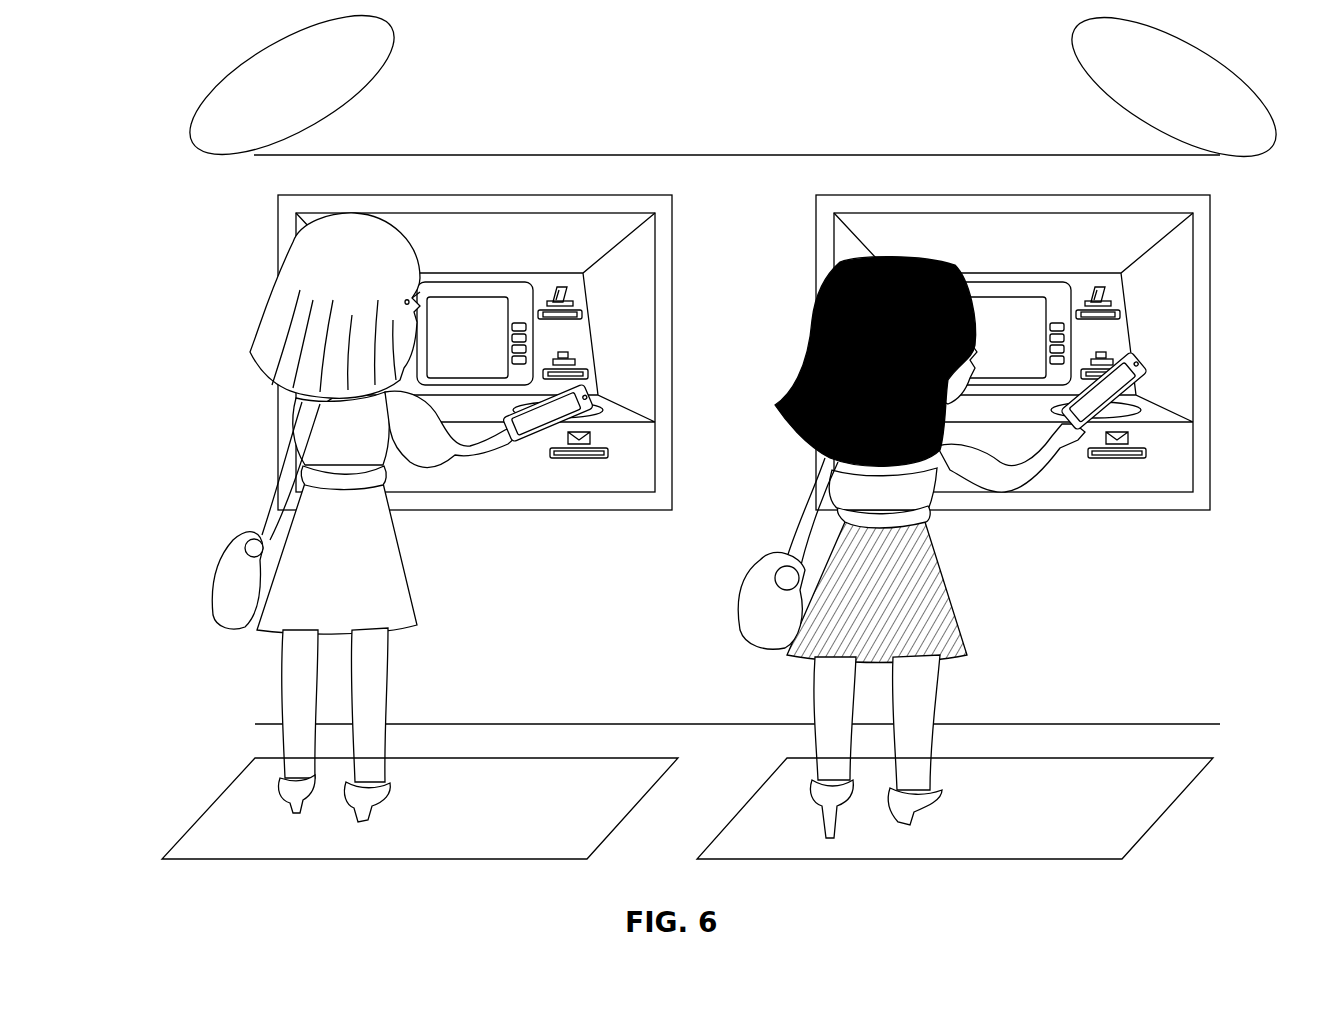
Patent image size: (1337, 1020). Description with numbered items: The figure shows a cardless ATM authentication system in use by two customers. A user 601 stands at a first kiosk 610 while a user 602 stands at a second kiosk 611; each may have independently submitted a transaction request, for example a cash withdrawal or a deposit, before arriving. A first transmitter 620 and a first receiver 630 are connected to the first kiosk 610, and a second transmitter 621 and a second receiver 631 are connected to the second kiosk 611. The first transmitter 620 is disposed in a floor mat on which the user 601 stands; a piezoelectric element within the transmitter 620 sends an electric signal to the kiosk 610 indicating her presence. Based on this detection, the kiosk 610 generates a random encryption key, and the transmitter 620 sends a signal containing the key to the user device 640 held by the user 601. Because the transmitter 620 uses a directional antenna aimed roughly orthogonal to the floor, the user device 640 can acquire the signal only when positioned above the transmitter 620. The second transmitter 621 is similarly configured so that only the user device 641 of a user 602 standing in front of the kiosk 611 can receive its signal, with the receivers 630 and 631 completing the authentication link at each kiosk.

The user 601 is at (247, 453).
The user 602 is at (962, 572).
The first kiosk 610 is at (672, 250).
The second kiosk 611 is at (1208, 250).
The first transmitter 620 is at (643, 797).
The second transmitter 621 is at (1173, 798).
The first receiver 630 is at (193, 118).
The second receiver 631 is at (1245, 90).
The user device 640 is at (594, 389).
The user device 641 is at (1143, 364).